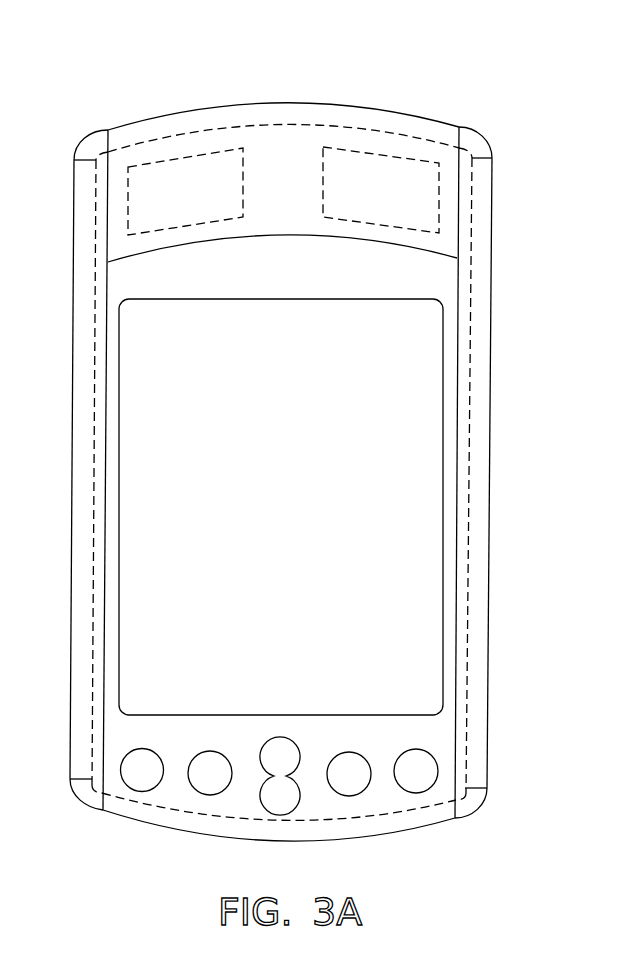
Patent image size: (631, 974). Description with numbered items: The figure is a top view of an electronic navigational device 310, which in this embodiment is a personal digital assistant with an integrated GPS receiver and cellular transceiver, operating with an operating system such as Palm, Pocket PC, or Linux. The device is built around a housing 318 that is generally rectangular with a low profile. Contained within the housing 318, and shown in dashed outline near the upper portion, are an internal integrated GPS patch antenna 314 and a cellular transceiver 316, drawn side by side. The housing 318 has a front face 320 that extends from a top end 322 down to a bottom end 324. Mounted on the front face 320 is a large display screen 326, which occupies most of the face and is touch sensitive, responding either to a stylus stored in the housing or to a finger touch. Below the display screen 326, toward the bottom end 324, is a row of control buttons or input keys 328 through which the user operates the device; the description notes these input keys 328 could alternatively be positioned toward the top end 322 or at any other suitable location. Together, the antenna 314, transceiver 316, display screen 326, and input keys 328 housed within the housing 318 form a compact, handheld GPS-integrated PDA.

The electronic navigational device 310 is at (285, 443).
The integrated GPS patch antenna 314 is at (186, 165).
The cellular transceiver 316 is at (377, 173).
The housing 318 is at (73, 258).
The front face 320 is at (123, 291).
The top end 322 is at (303, 103).
The bottom end 324 is at (377, 835).
The display screen 326 is at (397, 528).
The input keys 328 is at (140, 792).